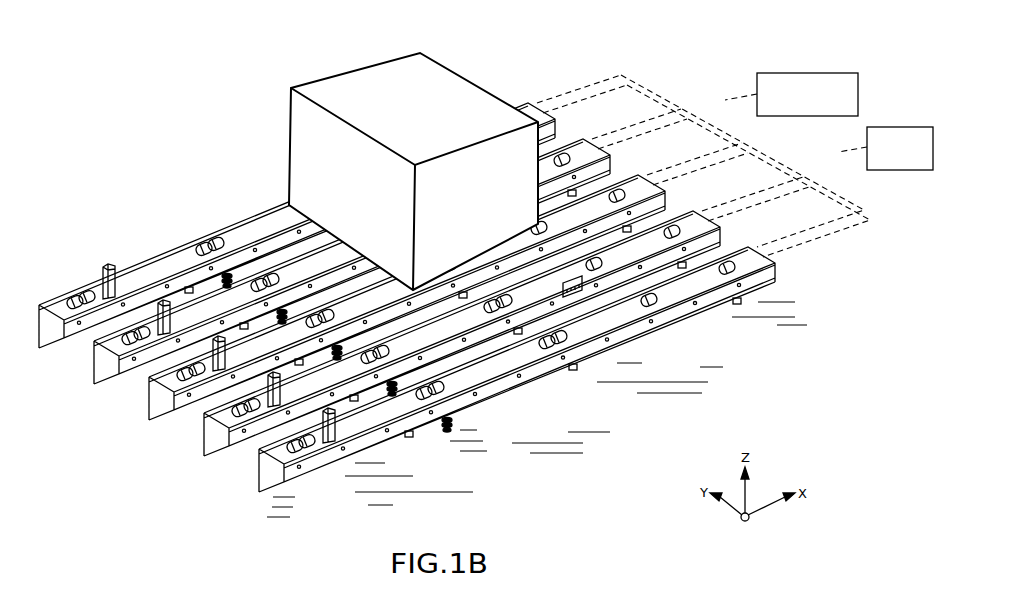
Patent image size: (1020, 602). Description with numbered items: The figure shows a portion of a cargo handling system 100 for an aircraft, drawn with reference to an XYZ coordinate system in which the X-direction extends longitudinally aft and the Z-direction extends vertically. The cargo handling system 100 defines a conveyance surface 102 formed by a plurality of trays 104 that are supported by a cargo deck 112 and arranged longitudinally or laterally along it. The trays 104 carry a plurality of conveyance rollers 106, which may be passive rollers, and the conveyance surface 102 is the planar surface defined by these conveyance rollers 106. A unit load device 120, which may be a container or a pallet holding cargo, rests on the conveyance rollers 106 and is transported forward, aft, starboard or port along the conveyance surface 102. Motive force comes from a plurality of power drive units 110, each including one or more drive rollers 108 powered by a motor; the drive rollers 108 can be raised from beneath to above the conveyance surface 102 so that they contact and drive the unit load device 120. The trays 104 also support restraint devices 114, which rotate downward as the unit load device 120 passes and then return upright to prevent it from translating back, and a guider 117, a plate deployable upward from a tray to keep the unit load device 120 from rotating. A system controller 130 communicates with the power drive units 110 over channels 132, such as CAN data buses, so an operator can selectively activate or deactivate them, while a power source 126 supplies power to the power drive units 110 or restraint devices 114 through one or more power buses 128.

The cargo handling system 100 is at (146, 78).
The conveyance surface 102 is at (58, 266).
The trays 104 is at (597, 173).
The conveyance rollers 106 is at (198, 252).
The drive rollers 108 is at (452, 338).
The power drive units 110 is at (420, 342).
The cargo deck 112 is at (679, 371).
The restraint devices 114 is at (332, 435).
The guider 117 is at (570, 291).
The unit load device 120 is at (437, 78).
The power source 126 is at (903, 127).
The power buses 128 is at (787, 248).
The system controller 130 is at (775, 73).
The channels 132 is at (590, 83).